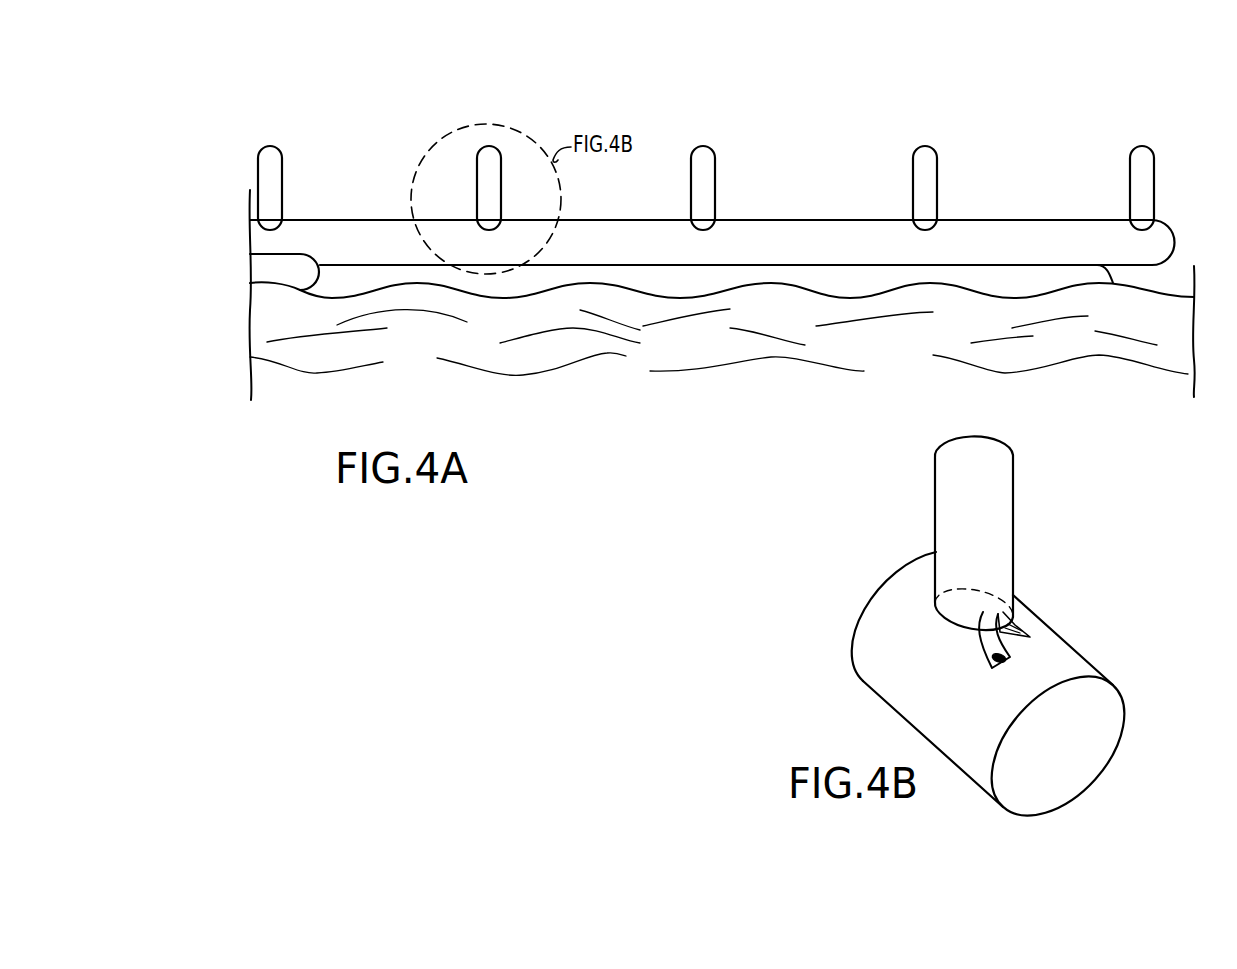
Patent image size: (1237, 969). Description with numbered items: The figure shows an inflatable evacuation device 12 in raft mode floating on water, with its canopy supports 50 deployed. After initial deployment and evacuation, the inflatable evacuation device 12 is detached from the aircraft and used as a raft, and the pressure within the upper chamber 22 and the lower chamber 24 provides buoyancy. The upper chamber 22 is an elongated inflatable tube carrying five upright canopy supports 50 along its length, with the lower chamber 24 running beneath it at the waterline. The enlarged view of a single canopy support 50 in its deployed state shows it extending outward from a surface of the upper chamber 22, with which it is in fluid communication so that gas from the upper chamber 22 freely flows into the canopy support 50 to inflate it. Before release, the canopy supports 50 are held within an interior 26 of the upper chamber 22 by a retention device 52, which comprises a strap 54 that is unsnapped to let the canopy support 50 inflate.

In FIG. 4A, the inflatable evacuation device 12 is at (865, 130).
In FIG. 4A, the upper chamber 22 is at (1056, 227).
In FIG. 4B, the upper chamber 22 is at (1078, 668).
In FIG. 4A, the lower chamber 24 is at (992, 274).
In FIG. 4B, the interior 26 is at (1081, 790).
In FIG. 4A, the canopy support 50 is at (712, 174).
In FIG. 4B, the canopy support 50 is at (946, 494).
In FIG. 4B, the retention device 52 is at (1045, 617).
In FIG. 4B, the strap 54 is at (982, 646).